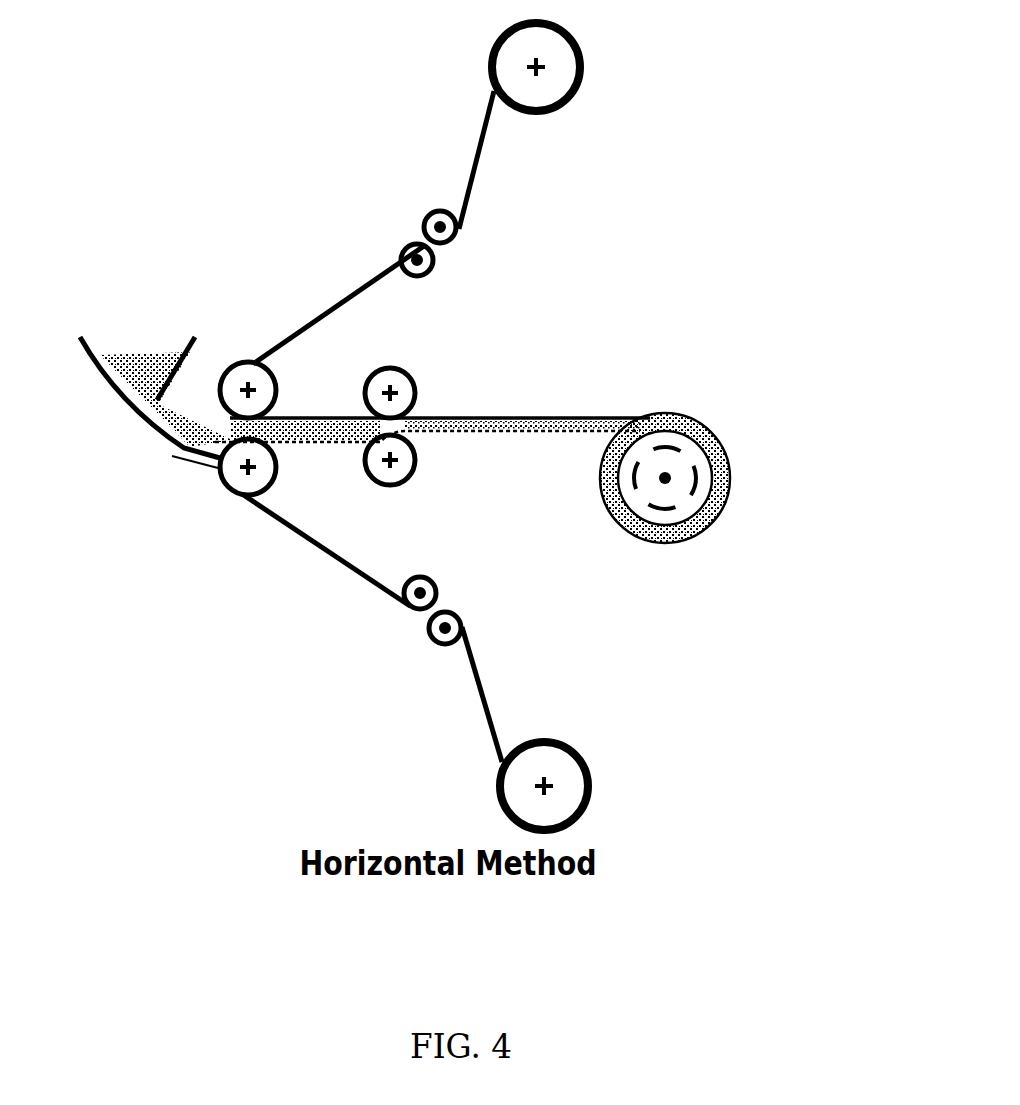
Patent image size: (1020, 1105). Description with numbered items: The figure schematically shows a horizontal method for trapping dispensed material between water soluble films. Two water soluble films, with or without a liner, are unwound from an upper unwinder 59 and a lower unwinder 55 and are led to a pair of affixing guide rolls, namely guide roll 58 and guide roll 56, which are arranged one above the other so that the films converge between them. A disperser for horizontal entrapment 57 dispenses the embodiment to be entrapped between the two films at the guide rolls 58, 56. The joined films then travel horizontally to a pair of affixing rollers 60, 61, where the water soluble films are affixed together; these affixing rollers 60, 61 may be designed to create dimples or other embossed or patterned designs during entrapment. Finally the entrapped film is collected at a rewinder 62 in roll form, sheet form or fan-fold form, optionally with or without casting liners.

The unwinder 55 is at (612, 800).
The guide roll 56 is at (241, 527).
The disperser for horizontal entrapment 57 is at (114, 300).
The guide roll 58 is at (233, 347).
The unwinder 59 is at (602, 72).
The affixing roller 60 is at (433, 382).
The affixing roller 61 is at (455, 504).
The rewinder 62 is at (717, 554).